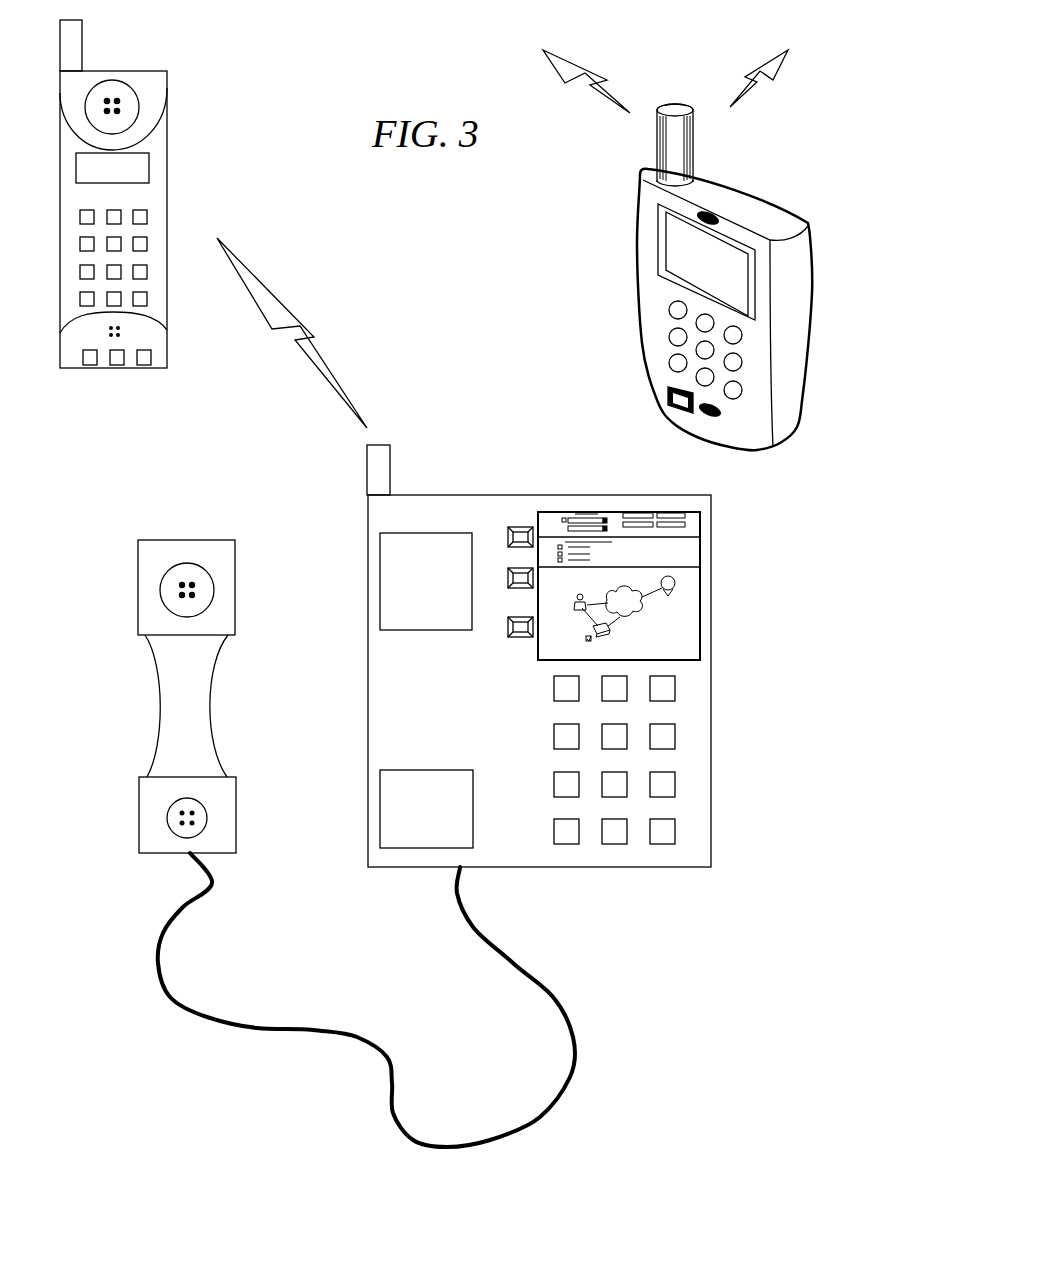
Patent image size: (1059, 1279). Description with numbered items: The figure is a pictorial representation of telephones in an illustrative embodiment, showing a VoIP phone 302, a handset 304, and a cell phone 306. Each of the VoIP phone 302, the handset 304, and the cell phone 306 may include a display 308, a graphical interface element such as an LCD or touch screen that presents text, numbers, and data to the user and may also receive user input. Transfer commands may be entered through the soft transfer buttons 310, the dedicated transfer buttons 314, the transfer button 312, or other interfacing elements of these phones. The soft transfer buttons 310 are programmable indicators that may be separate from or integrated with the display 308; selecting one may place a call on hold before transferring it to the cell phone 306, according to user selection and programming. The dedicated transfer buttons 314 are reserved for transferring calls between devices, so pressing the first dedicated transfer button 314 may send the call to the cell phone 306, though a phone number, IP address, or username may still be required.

The VoIP phone 302 is at (467, 494).
The handset 304 is at (172, 205).
The cell phone 306 is at (634, 212).
The display 308 is at (128, 167).
The soft transfer buttons 310 is at (517, 511).
The transfer button 312 is at (150, 370).
The dedicated transfer buttons 314 is at (670, 392).